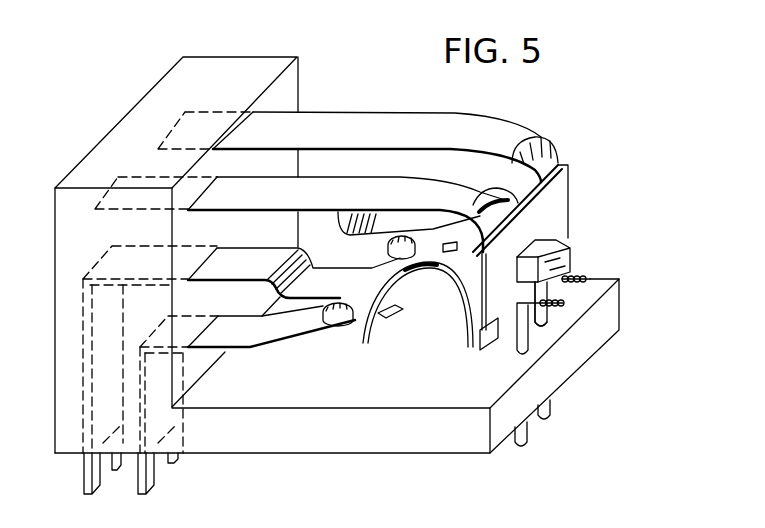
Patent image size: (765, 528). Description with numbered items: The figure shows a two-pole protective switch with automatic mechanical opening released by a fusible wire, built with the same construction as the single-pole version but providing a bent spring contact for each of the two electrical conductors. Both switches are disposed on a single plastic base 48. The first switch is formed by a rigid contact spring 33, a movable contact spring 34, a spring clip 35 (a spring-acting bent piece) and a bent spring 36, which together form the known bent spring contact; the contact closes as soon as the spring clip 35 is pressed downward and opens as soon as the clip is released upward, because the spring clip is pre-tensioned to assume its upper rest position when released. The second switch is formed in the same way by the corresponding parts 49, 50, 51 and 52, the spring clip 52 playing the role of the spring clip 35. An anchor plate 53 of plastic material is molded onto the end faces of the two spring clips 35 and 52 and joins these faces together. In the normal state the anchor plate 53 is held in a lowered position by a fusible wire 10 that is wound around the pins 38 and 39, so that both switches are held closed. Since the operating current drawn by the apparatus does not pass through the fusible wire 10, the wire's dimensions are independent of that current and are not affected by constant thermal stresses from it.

The fusible wire 10 is at (532, 277).
The rigid contact spring 33 is at (247, 268).
The movable contact spring 34 is at (342, 323).
The spring clip 35 is at (305, 190).
The bent spring 36 is at (460, 283).
The pin 38 is at (528, 345).
The pin 39 is at (550, 323).
The plastic base 48 is at (312, 442).
The rigid contact spring of second switch 49 is at (376, 226).
The movable contact spring of second switch 50 is at (405, 268).
The bent spring of second switch 51 is at (541, 137).
The spring clip of second switch 52 is at (363, 125).
The anchor plate 53 is at (555, 213).